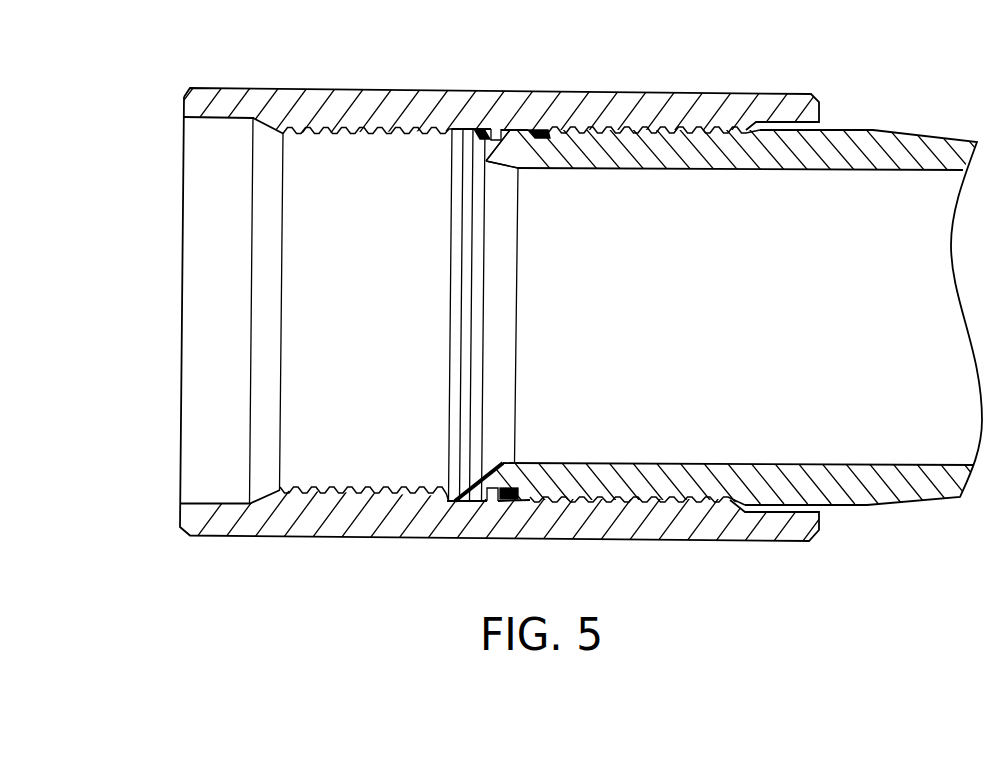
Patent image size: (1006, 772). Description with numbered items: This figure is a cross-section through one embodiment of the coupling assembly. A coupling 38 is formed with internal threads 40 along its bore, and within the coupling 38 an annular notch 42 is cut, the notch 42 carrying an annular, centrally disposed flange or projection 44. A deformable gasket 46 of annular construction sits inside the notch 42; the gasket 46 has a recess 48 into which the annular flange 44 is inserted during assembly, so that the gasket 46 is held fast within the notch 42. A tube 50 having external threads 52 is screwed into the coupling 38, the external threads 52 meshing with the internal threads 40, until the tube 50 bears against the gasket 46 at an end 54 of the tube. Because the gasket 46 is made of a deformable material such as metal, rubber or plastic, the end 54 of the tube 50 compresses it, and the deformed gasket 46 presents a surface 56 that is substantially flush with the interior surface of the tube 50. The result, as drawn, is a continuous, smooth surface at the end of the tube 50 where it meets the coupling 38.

The coupling 38 is at (370, 102).
The internal threads 40 is at (418, 130).
The annular notch 42 is at (520, 130).
The annular flange 44 is at (492, 490).
The deformable gasket 46 is at (477, 504).
The recess 48 is at (509, 129).
The tube 50 is at (873, 129).
The external threads 52 is at (718, 128).
The end 54 is at (553, 131).
The surface 56 is at (506, 152).